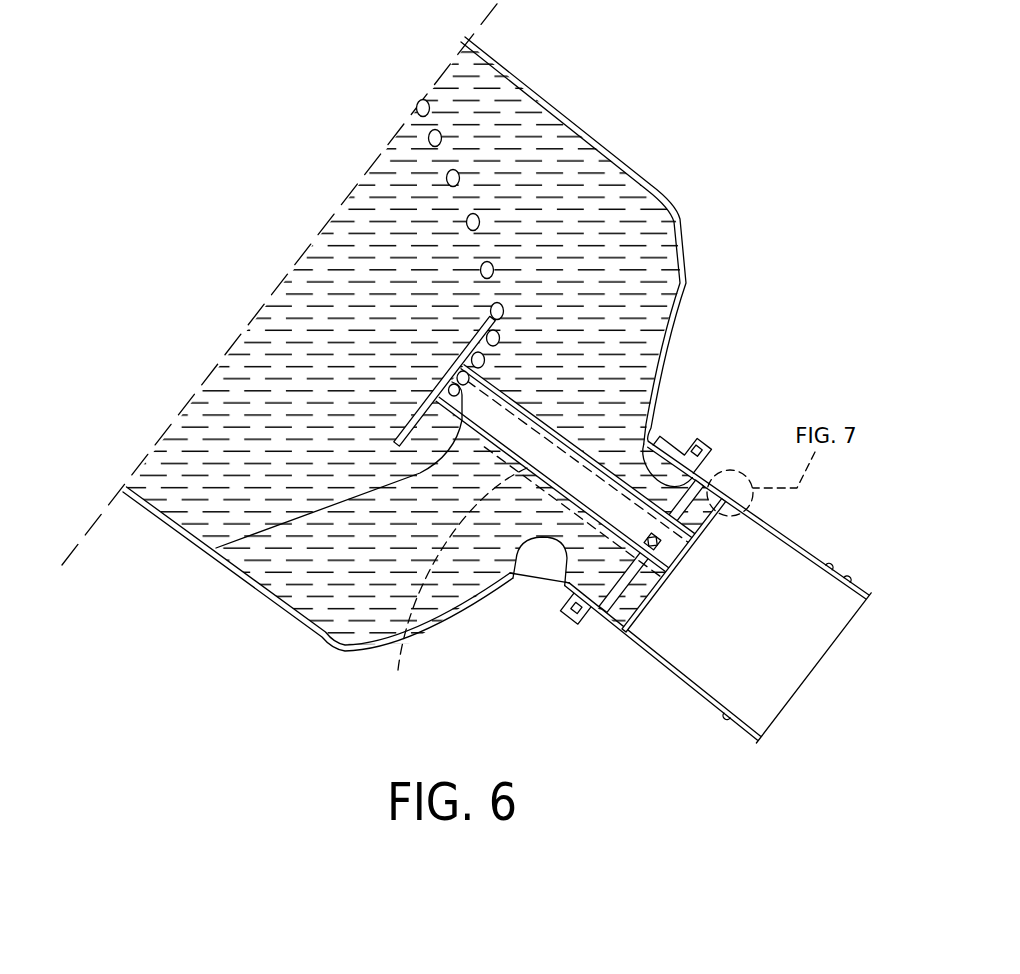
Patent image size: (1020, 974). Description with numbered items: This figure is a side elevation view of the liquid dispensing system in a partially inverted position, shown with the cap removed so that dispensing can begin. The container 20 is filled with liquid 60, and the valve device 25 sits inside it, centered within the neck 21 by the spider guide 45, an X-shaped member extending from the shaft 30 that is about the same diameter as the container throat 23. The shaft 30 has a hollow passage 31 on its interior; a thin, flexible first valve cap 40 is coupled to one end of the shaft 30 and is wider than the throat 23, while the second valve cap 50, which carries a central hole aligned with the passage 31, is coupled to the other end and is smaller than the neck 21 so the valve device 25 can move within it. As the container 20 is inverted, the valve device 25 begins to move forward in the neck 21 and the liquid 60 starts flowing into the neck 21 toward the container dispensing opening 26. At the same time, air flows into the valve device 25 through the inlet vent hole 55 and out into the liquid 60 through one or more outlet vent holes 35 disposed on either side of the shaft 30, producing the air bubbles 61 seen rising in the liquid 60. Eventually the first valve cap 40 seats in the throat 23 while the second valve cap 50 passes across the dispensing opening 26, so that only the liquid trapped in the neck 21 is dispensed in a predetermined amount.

The container 20 is at (589, 132).
The neck 21 is at (707, 586).
The container throat 23 is at (528, 575).
The valve device 25 is at (537, 410).
The container dispensing opening 26 is at (825, 675).
The shaft 30 is at (566, 468).
The hollow passage 31 is at (564, 478).
The outlet vent holes 35 is at (216, 548).
The first valve cap 40 is at (445, 381).
The spider guide 45 is at (623, 520).
The second valve cap 50 is at (674, 565).
The inlet vent hole 55 is at (651, 546).
The liquid 60 is at (343, 590).
The air bubbles 61 is at (428, 137).